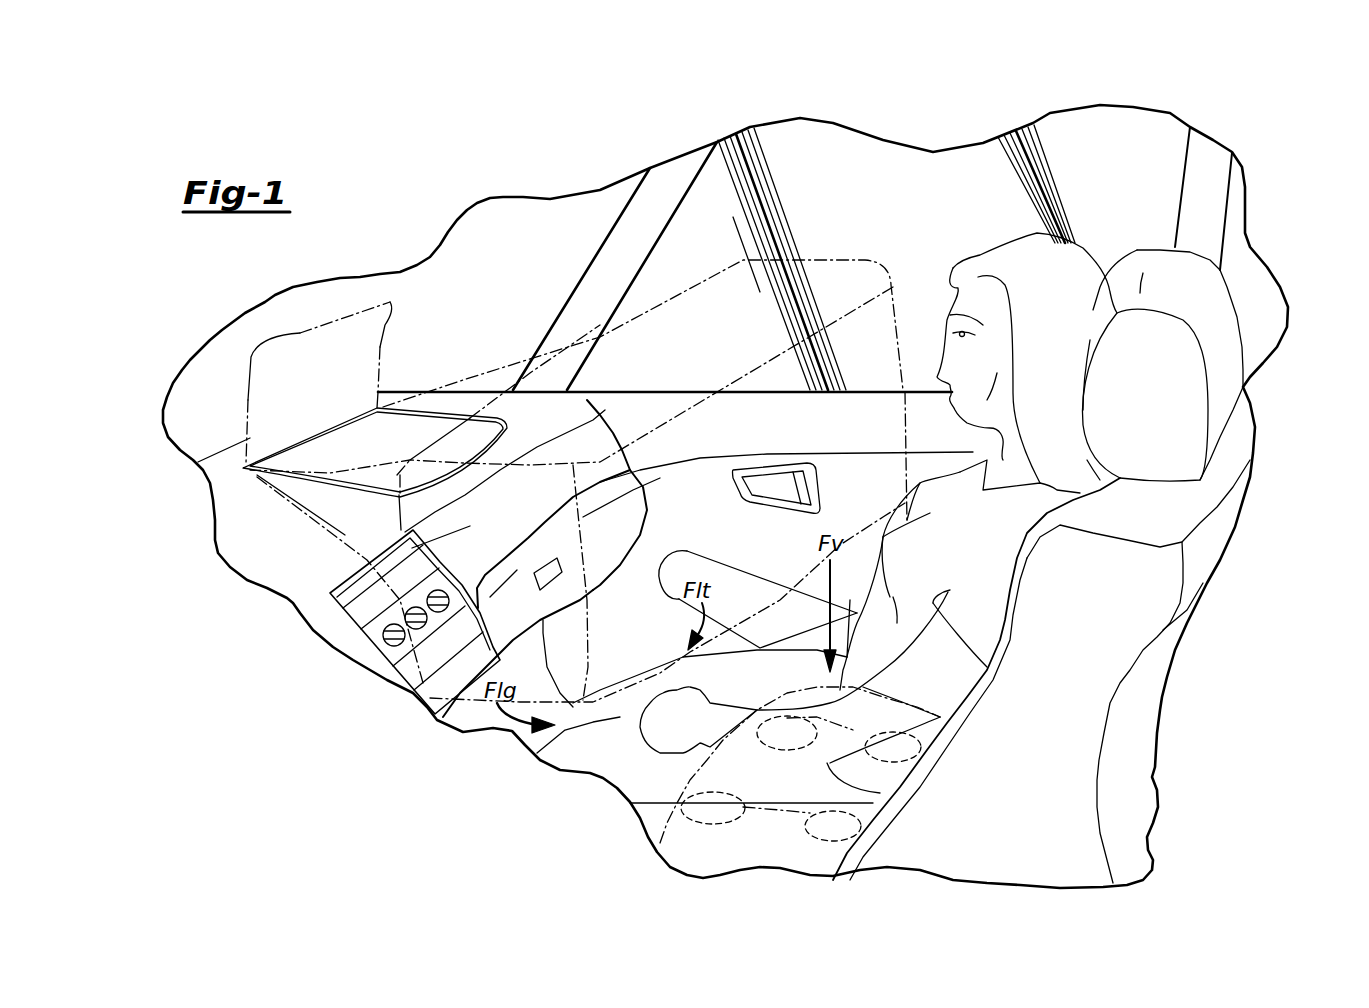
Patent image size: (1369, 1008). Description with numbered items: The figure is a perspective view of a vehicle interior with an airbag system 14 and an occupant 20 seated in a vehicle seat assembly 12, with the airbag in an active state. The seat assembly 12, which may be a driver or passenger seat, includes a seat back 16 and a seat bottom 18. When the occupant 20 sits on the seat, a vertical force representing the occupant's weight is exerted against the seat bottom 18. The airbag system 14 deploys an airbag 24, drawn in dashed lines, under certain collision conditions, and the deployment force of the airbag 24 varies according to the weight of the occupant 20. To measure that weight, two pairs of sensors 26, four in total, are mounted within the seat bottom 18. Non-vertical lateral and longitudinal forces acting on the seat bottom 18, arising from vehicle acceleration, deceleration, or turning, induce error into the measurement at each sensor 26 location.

The vehicle seat assembly 12 is at (991, 587).
The airbag system 14 is at (221, 423).
The seat back 16 is at (1067, 670).
The seat bottom 18 is at (804, 806).
The vehicle occupant 20 is at (1073, 287).
The airbag 24 is at (833, 258).
The sensors 26 is at (790, 748).